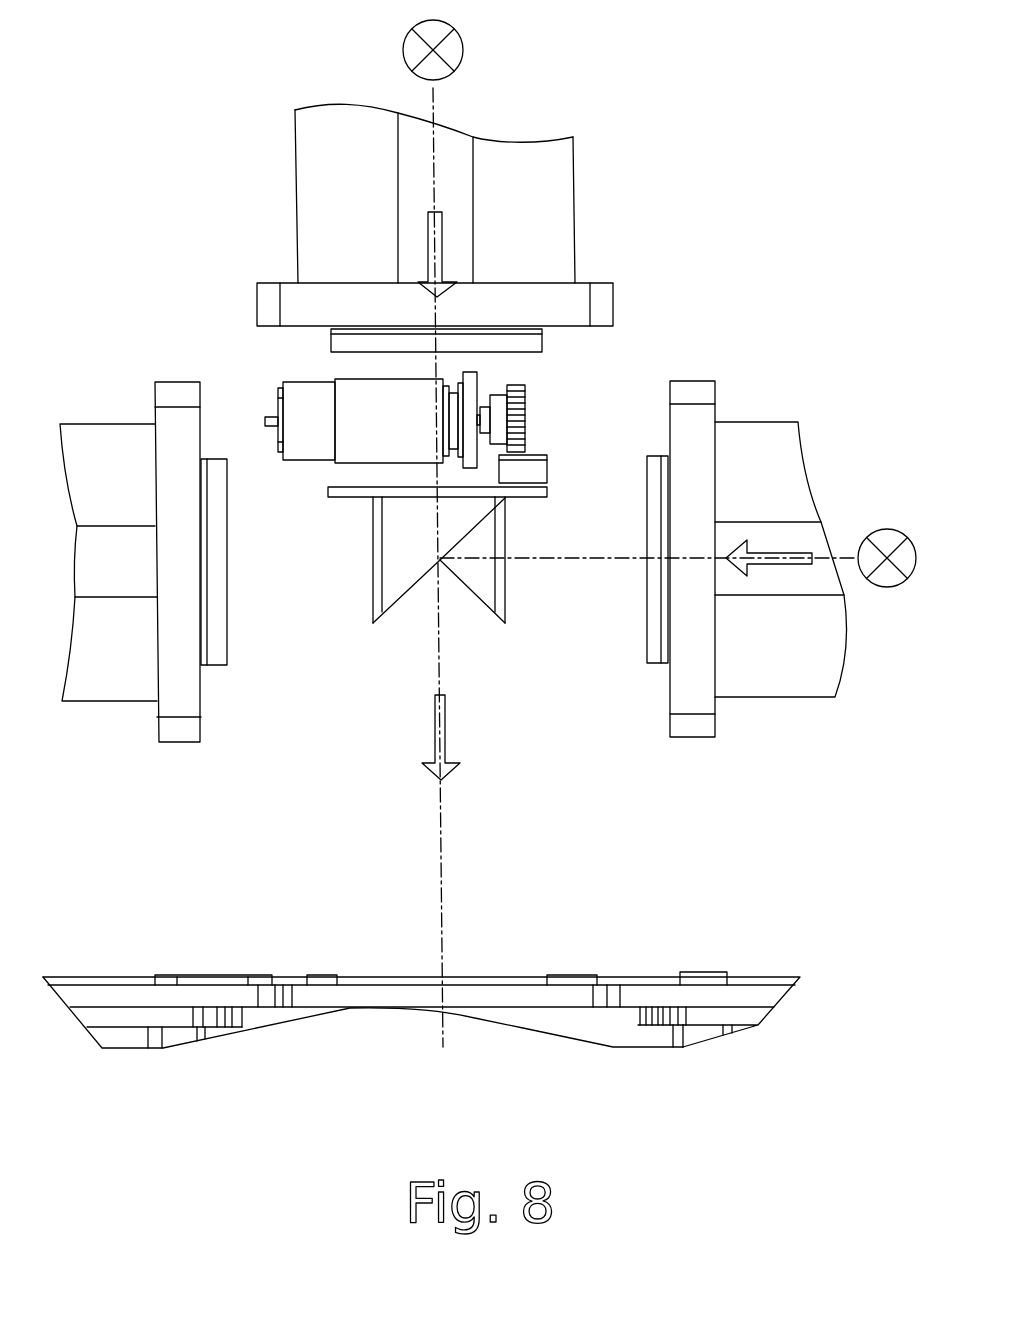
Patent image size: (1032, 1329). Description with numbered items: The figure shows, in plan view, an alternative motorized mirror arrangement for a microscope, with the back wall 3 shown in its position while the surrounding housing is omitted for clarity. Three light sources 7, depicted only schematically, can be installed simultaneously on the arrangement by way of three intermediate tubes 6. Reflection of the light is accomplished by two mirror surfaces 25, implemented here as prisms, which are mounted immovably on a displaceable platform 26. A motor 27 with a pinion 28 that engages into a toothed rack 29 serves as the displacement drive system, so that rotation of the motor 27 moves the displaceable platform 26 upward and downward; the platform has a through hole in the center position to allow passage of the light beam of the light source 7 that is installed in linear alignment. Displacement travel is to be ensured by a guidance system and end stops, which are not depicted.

The back wall 3 is at (212, 995).
The intermediate tube 6 is at (542, 195).
The light source 7 is at (450, 45).
The mirror surface 25 is at (405, 595).
The displaceable platform 26 is at (345, 490).
The motor 27 is at (313, 408).
The pinion 28 is at (520, 398).
The toothed rack 29 is at (520, 465).